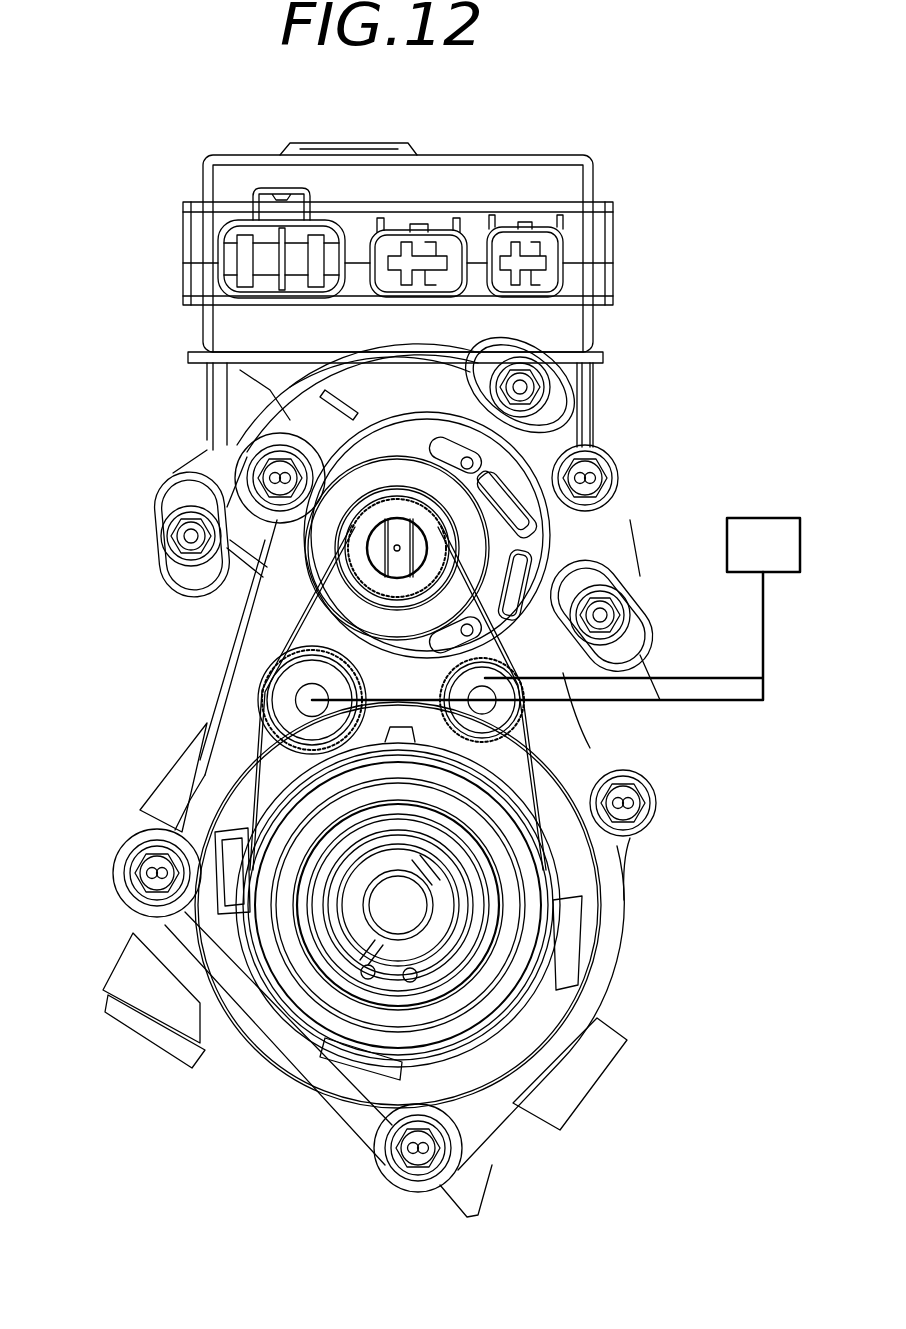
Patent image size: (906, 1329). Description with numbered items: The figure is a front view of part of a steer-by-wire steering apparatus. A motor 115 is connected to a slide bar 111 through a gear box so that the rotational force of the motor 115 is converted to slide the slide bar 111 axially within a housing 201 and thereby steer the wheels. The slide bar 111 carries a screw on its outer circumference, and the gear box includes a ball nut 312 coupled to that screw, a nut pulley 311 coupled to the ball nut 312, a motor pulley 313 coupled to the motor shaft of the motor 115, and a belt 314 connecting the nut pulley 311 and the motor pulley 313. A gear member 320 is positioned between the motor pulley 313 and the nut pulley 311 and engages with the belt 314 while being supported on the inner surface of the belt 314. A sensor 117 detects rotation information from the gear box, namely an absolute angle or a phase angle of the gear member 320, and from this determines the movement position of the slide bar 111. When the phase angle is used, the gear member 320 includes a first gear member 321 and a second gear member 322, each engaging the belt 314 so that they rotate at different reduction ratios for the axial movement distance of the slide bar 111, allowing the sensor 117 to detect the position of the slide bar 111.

The motor 115 is at (148, 330).
The motor pulley 313 is at (395, 515).
The belt 314 is at (323, 547).
The gear member 320 is at (98, 647).
The first gear member 321 is at (280, 695).
The second gear member 322 is at (455, 693).
The sensor 117 is at (763, 518).
The housing 201 is at (595, 767).
The slide bar 111 is at (442, 912).
The nut pulley 311 is at (307, 1007).
The ball nut 312 is at (457, 978).